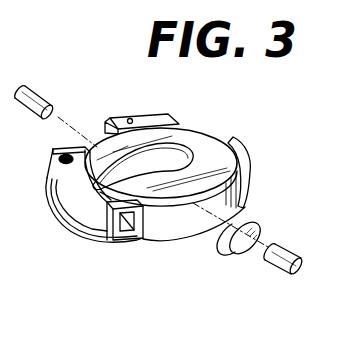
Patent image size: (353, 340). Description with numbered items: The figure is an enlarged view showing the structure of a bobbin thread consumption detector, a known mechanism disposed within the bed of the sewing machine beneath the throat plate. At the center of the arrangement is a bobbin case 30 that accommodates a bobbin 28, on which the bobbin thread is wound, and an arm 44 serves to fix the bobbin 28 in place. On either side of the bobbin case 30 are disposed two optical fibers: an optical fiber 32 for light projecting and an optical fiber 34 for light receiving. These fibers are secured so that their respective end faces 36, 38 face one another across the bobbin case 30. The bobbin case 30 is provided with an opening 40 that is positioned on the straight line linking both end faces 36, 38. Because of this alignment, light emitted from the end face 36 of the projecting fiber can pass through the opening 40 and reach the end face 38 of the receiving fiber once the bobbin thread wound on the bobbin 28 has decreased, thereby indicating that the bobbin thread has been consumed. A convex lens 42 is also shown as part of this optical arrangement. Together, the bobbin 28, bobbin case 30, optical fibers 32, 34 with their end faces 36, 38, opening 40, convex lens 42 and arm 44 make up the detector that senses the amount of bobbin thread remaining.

The bobbin 28 is at (208, 143).
The bobbin case 30 is at (85, 208).
The optical fiber for light projecting 32 is at (249, 259).
The optical fiber for light receiving 34 is at (49, 113).
The end face 36 is at (268, 248).
The end face 38 is at (50, 118).
The opening 40 is at (103, 150).
The convex lens 42 is at (240, 240).
The arm 44 is at (177, 153).